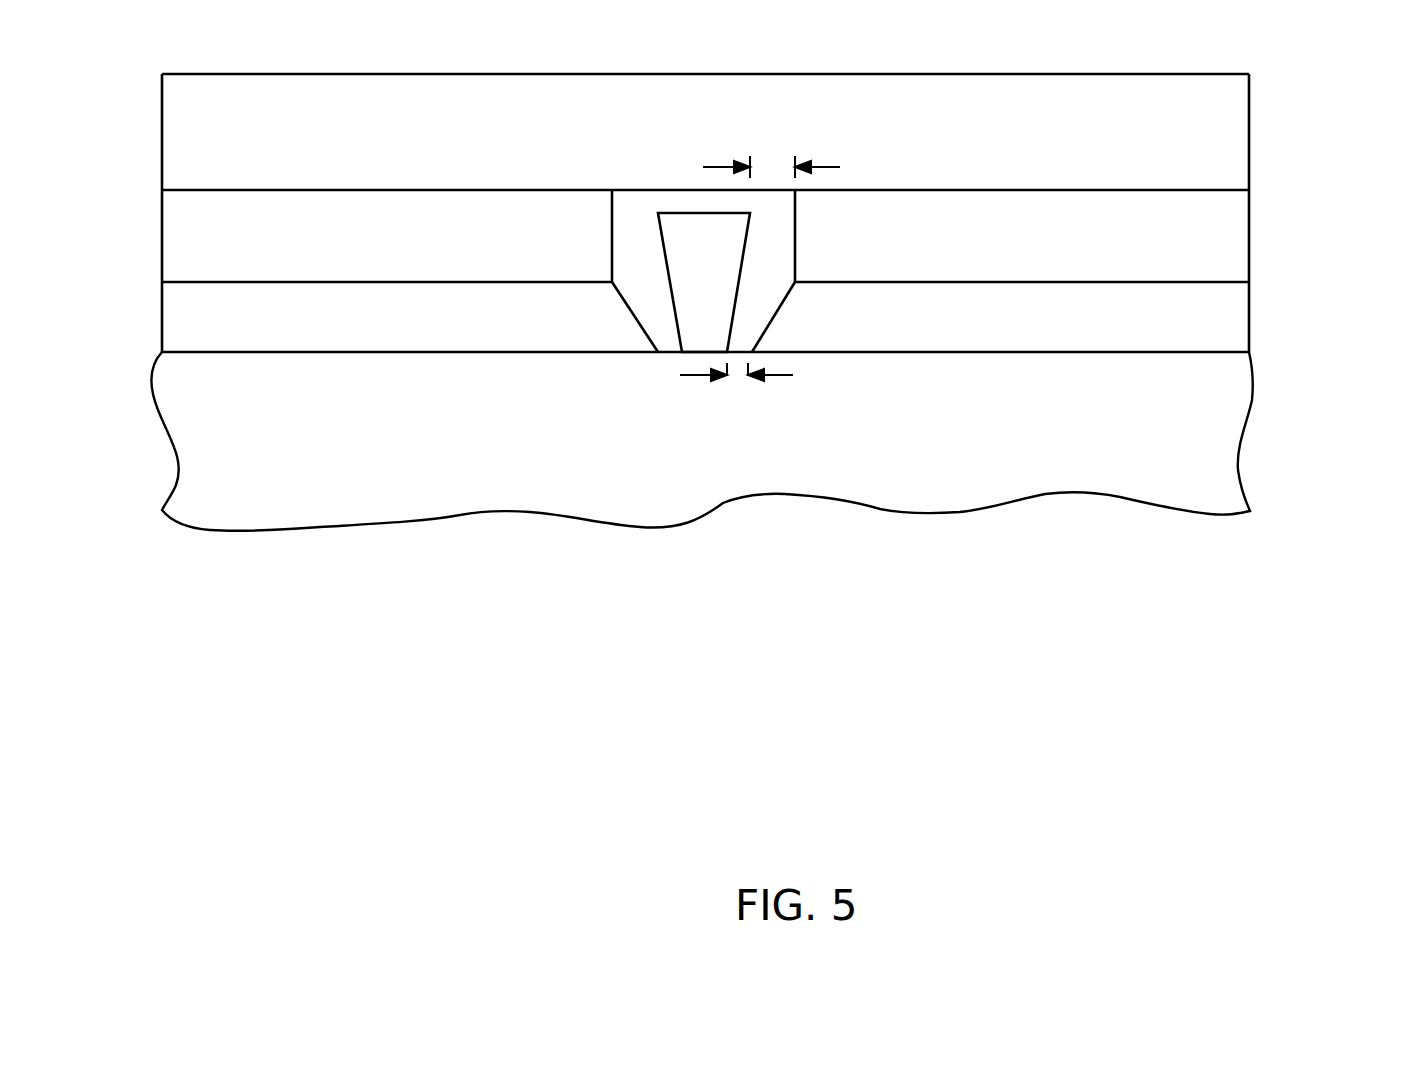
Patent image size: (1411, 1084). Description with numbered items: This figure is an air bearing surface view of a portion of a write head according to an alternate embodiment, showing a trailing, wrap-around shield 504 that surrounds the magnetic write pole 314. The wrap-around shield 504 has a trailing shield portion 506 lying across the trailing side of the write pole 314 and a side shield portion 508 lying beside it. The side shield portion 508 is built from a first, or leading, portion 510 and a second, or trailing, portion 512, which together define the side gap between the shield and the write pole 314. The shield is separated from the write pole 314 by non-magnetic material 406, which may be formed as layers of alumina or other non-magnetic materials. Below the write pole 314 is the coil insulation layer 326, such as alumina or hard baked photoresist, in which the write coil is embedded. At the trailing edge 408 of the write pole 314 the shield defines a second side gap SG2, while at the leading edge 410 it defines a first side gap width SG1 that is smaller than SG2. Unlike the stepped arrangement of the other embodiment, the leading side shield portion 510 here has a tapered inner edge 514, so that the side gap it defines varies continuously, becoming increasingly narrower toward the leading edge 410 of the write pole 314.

The trailing, wrap-around shield 504 is at (1263, 352).
The trailing shield portion 506 is at (726, 99).
The side shield portion 508 is at (150, 352).
The first (or leading) portion 510 is at (312, 314).
The second (or trailing) portion 512 is at (312, 233).
The tapered inner edge 514 is at (630, 309).
The write pole 314 is at (704, 282).
The non-magnetic material 406 is at (834, 234).
The trailing edge 408 is at (704, 212).
The leading edge 410 is at (705, 352).
The coil insulation layer 326 is at (758, 430).
The first side gap width SG1 is at (783, 375).
The second side gap SG2 is at (840, 167).